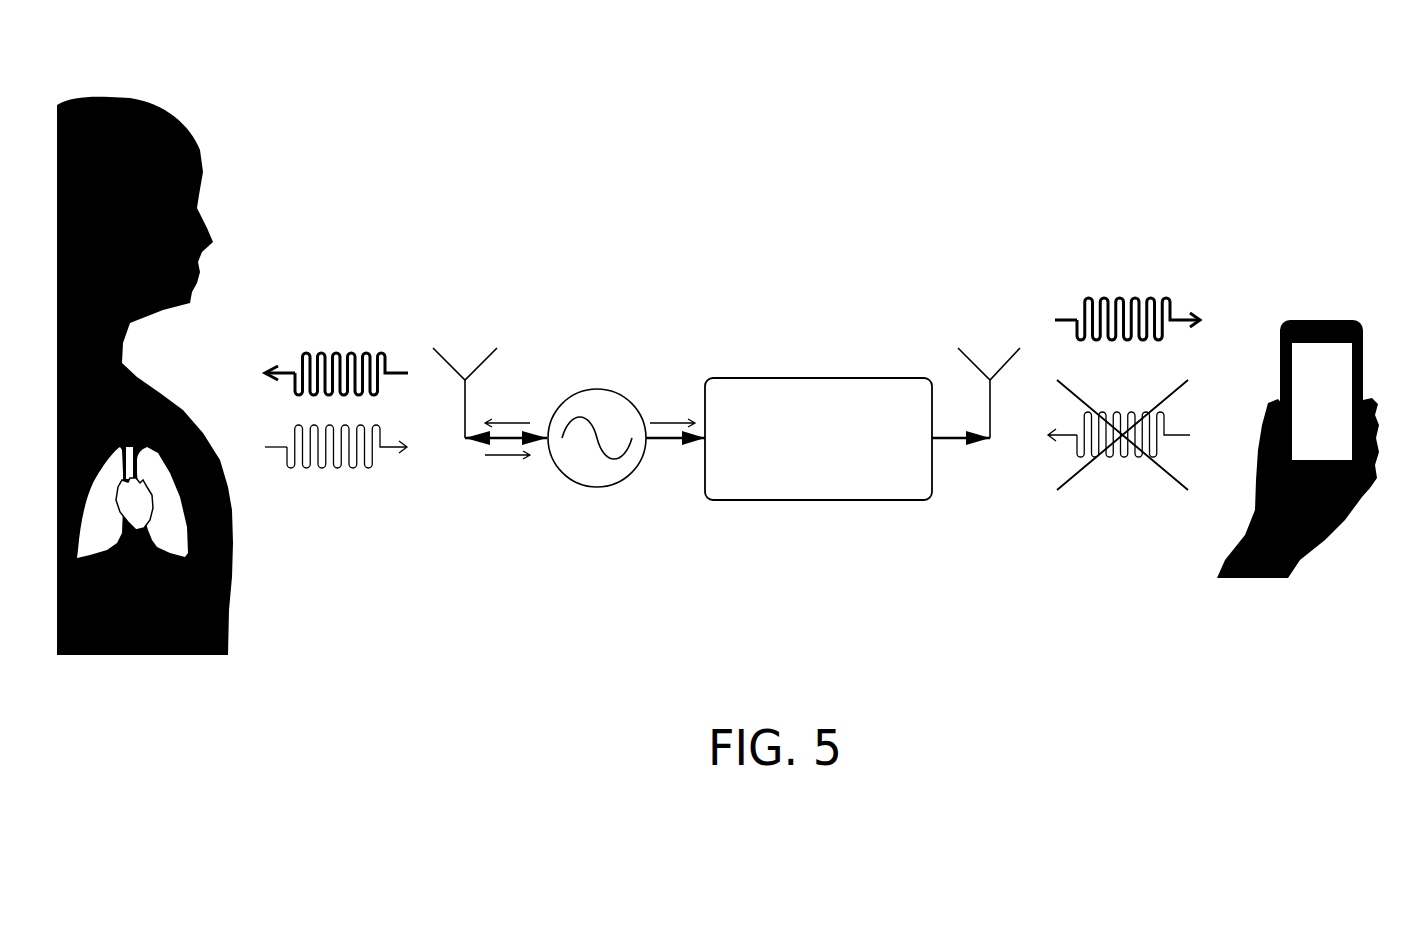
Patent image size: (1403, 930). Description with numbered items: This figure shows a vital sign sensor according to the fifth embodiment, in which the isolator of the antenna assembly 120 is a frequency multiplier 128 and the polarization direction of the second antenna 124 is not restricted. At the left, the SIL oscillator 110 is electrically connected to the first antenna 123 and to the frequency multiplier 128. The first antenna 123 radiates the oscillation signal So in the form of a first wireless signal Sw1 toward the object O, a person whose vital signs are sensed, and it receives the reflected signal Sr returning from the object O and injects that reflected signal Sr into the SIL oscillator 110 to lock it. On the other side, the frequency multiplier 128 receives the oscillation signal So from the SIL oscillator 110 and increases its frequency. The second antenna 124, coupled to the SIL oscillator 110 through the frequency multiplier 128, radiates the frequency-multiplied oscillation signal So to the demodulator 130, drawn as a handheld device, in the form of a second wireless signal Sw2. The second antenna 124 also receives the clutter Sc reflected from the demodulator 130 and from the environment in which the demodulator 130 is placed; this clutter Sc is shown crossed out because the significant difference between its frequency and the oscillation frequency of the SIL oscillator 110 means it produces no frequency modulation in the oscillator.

The object O is at (197, 147).
The SIL oscillator 110 is at (597, 389).
The antenna assembly 120 is at (470, 262).
The first antenna 123 is at (453, 362).
The second antenna 124 is at (975, 360).
The frequency multiplier 128 is at (808, 378).
The demodulator 130 is at (1340, 319).
The first wireless signal Sw1 is at (338, 353).
The second wireless signal Sw2 is at (1122, 298).
The reflected signal Sr is at (338, 468).
The oscillation signal So is at (590, 406).
The clutter Sc is at (1115, 457).